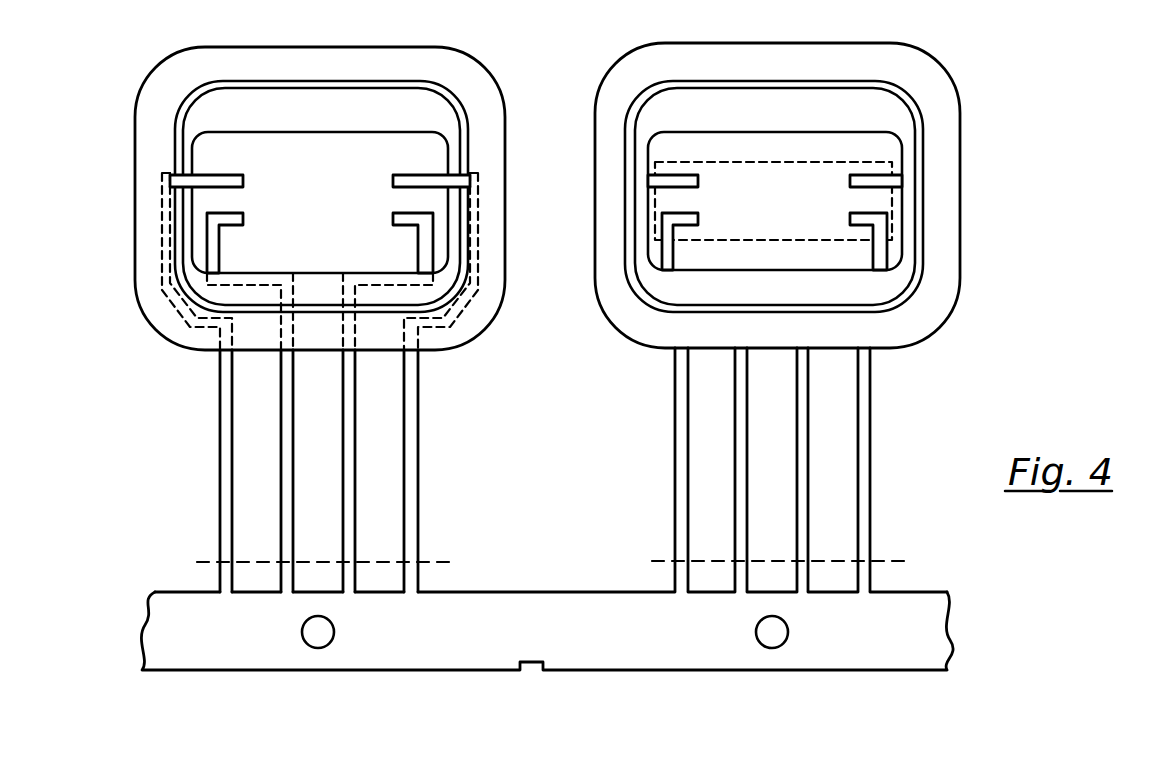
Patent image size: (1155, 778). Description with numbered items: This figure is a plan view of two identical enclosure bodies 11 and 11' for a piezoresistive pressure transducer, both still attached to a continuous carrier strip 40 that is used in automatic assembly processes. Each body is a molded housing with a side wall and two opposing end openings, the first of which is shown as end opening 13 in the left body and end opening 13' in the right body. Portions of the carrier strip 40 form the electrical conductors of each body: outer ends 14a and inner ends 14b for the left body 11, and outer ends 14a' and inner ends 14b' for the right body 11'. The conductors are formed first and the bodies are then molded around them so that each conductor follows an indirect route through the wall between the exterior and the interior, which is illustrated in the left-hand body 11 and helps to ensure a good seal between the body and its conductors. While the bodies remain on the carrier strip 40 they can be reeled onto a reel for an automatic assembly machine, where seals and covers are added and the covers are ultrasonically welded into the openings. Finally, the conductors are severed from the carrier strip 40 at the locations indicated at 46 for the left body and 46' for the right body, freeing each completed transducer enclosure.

The body 11 is at (320, 184).
The first end opening 13 is at (321, 165).
The outer ends of the conductors 14a is at (308, 382).
The inner ends of the conductors 14b is at (320, 224).
The severing location 46 is at (289, 542).
The body 11' is at (786, 181).
The first end opening 13' is at (774, 160).
The outer ends of the conductors 14a' is at (774, 376).
The inner ends of the conductors 14b' is at (775, 222).
The severing location 46' is at (757, 542).
The carrier strip 40 is at (885, 670).